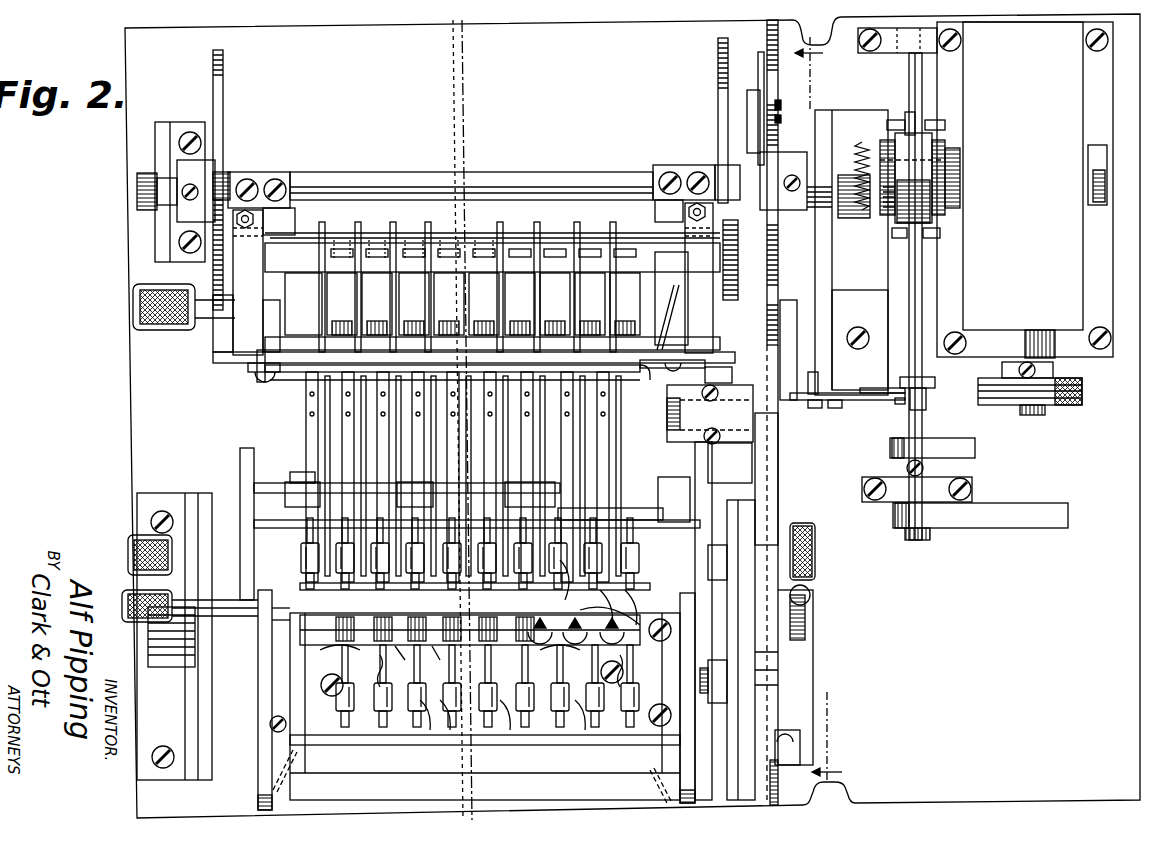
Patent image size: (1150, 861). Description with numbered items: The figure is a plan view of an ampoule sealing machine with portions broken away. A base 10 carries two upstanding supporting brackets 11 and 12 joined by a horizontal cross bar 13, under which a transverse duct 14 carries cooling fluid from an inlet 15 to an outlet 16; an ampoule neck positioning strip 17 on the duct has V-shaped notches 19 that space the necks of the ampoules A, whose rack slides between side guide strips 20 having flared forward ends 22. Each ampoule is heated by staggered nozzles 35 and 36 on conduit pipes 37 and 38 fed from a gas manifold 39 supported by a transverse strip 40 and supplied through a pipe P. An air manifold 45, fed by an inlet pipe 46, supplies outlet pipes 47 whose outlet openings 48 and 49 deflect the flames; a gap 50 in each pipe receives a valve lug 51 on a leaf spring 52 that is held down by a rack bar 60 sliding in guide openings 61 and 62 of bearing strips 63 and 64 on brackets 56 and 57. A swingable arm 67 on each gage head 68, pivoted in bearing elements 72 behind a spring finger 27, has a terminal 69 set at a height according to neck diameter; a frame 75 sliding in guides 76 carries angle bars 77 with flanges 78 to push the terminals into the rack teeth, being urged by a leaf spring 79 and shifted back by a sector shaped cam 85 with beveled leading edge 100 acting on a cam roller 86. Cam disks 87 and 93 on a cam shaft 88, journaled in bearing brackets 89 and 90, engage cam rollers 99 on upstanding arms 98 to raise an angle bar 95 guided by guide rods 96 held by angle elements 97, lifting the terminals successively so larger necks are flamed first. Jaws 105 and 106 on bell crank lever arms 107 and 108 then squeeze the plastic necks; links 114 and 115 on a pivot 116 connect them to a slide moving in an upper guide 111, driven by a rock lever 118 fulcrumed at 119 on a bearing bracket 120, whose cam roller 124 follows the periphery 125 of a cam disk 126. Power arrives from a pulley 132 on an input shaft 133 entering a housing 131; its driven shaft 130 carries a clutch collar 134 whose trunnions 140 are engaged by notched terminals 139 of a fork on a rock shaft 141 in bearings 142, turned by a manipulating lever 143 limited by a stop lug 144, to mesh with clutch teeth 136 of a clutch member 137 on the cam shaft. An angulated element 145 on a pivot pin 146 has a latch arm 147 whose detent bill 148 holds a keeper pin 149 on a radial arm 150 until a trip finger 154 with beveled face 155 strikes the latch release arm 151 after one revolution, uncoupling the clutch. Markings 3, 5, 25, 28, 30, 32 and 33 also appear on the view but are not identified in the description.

The stop pin 3 is at (820, 378).
The section line 5- 5 is at (818, 409).
The base 10 is at (130, 422).
The supporting bracket 11 is at (185, 690).
The supporting bracket 12 is at (779, 652).
The cross bar 13 is at (300, 586).
The transverse duct 14 is at (637, 582).
The inlet 15 is at (132, 616).
The outlet 16 is at (820, 586).
The ampoule neck positioning strip 17 is at (614, 582).
The V-shaped notches 19 is at (628, 603).
The side guide strips 20 is at (290, 672).
The forward ends of the side guide strips 22 is at (258, 800).
The screw 25 is at (333, 692).
The spring finger 27 is at (332, 660).
The rail 28 is at (315, 625).
The plate 30 is at (779, 468).
The guide 32 is at (778, 791).
The bracket 33 is at (800, 751).
The nozzle 35 is at (305, 555).
The nozzle 36 is at (452, 720).
The conduit pipe 37 is at (315, 520).
The conduit pipe 38 is at (385, 720).
The gas manifold 39 is at (254, 524).
The transverse strip 40 is at (610, 520).
The air manifold 45 is at (295, 242).
The inlet pipe 46 is at (163, 330).
The outlet pipe 47 is at (345, 450).
The outlet opening 48 is at (570, 560).
The outlet opening 49 is at (385, 660).
The gap 50 is at (500, 350).
The valve lug 51 is at (360, 350).
The leaf spring 52 is at (345, 420).
The upstanding bracket 56 is at (265, 348).
The upstanding bracket 57 is at (686, 300).
The rack bar 60 is at (378, 248).
The guide opening 61 is at (414, 248).
The guide opening 62 is at (595, 248).
The bearing strip 63 is at (300, 240).
The bearing strip 64 is at (590, 305).
The vertically swingable arm 67 is at (385, 515).
The gage head 68 is at (410, 650).
The terminal 69 is at (355, 240).
The bearing element 72 is at (445, 650).
The frame 75 is at (213, 357).
The guide 76 is at (260, 382).
The angle bar 77 is at (330, 335).
The rearwardly directed flange 78 is at (546, 305).
The leaf spring 79 is at (660, 310).
The sector shaped cam 85 is at (776, 292).
The cam roller 86 is at (715, 367).
The cam disk 87 is at (718, 48).
The cam shaft 88 is at (517, 180).
The bearing bracket 89 is at (180, 122).
The bearing bracket 90 is at (825, 258).
The complementary cam disk 93 is at (224, 70).
The angle bar 95 is at (560, 240).
The guide rod 96 is at (262, 172).
The angle element 97 is at (235, 270).
The upstanding arm 98 is at (285, 215).
The cam roller 99 is at (222, 175).
The beveled leading edge 100 is at (772, 252).
The jaw 105 is at (254, 488).
The jaw 106 is at (406, 768).
The bell crank lever arm 107 is at (240, 460).
The bell crank lever arm 108 is at (258, 770).
The upper guide 111 is at (660, 500).
The link 114 is at (816, 556).
The link 115 is at (779, 670).
The pivot 116 is at (706, 556).
The rock lever 118 is at (746, 100).
The fulcrum 119 is at (667, 420).
The bearing bracket 120 is at (730, 463).
The cam roller 124 is at (780, 100).
The periphery 125 is at (759, 88).
The cam disk 126 is at (780, 150).
The driven shaft 130 is at (952, 178).
The housing 131 is at (1025, 190).
The pulley 132 is at (1070, 395).
The power input shaft 133 is at (1030, 405).
The clutch collar 134 is at (918, 150).
The clutch teeth 136 is at (858, 218).
The fixed clutch member 137 is at (848, 150).
The notched terminals 139 is at (935, 125).
The trunnions 140 is at (917, 115).
The rock shaft 141 is at (920, 540).
The bearing 142 is at (880, 53).
The manipulating lever 143 is at (1040, 515).
The stop lug 144 is at (970, 450).
The angulated element 145 is at (842, 400).
The pivot pin 146 is at (840, 408).
The latch arm 147 is at (880, 393).
The detent bill 148 is at (900, 402).
The keeper pin 149 is at (926, 398).
The radial arm 150 is at (936, 382).
The latch release arm 151 is at (815, 408).
The trip finger 154 is at (810, 345).
The beveled face 155 is at (790, 400).
The ampoules A is at (562, 644).
The pipe P is at (128, 552).